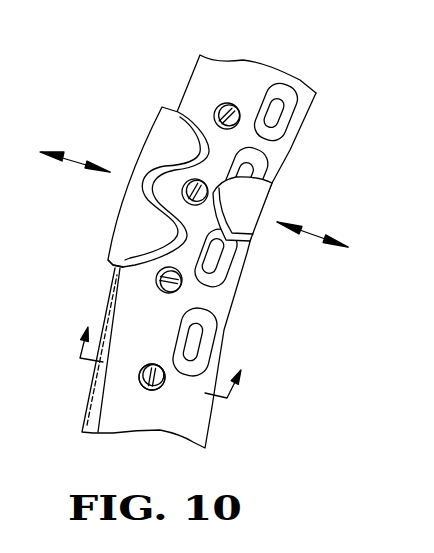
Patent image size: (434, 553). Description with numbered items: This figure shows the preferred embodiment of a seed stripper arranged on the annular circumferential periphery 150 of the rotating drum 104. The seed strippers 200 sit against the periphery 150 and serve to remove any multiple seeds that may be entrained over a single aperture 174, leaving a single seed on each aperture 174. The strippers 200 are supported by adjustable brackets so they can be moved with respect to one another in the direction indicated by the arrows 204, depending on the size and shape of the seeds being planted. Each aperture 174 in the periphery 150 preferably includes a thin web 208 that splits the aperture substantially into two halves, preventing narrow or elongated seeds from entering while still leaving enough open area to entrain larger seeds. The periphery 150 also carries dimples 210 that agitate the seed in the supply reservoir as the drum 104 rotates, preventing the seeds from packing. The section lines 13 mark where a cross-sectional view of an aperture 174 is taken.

The drum 104 is at (183, 73).
The annular circumferential periphery 150 is at (240, 77).
The seed stripper 200 is at (155, 135).
The arrows 204 is at (72, 160).
The aperture 174 is at (181, 287).
The dimples 210 is at (207, 345).
The web 208 is at (159, 389).
The section lines 13- 13 is at (161, 356).